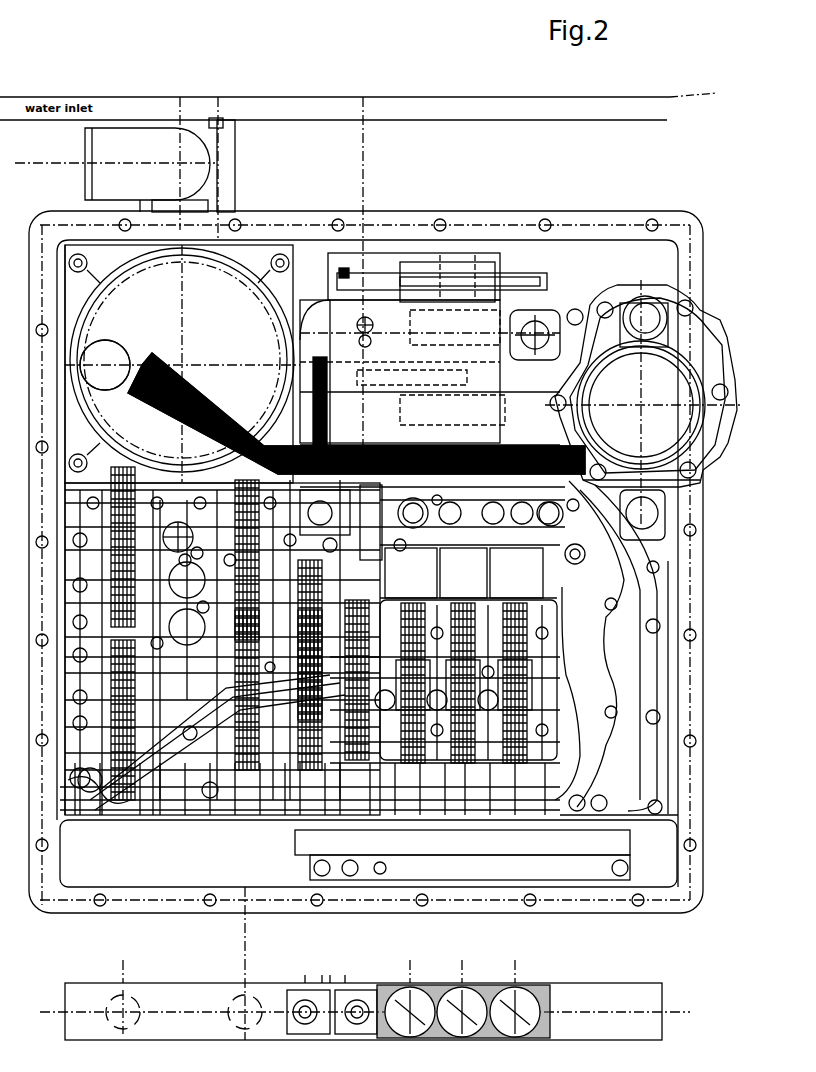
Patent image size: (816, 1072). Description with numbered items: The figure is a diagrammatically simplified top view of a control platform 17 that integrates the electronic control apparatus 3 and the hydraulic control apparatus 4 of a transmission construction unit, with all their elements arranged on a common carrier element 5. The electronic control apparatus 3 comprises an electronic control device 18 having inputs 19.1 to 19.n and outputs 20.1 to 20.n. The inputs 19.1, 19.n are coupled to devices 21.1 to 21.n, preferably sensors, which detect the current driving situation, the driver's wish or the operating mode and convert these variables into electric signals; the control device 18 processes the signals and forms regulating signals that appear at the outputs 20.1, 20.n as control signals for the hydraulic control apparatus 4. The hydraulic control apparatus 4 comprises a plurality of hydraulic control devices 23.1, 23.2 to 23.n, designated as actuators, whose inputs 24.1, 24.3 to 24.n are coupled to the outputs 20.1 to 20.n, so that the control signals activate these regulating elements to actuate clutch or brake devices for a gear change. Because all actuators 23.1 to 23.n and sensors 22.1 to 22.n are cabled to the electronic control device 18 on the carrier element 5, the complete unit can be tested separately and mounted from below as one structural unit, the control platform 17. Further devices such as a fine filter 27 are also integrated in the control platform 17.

The electronic control apparatus 3 is at (208, 322).
The hydraulic control apparatus 4 is at (182, 800).
The carrier element 5 is at (137, 905).
The control platform 17 is at (690, 825).
The electronic control device 18 is at (322, 276).
The input 19.1 is at (140, 358).
The input 19.n is at (171, 365).
The output 20.1 is at (137, 378).
The output 20.n is at (356, 413).
The detection device 21.1 is at (372, 317).
The detection device 21.n is at (410, 295).
The sensor 22.1 is at (343, 272).
The sensor 22.n is at (372, 343).
The hydraulic control device 23.1 is at (411, 655).
The hydraulic control device 23.2 is at (463, 655).
The hydraulic control device 23.n is at (516, 655).
The input 24.1 is at (327, 830).
The input 24.3 is at (420, 830).
The input 24.n is at (475, 830).
The fine filter 27 is at (642, 402).